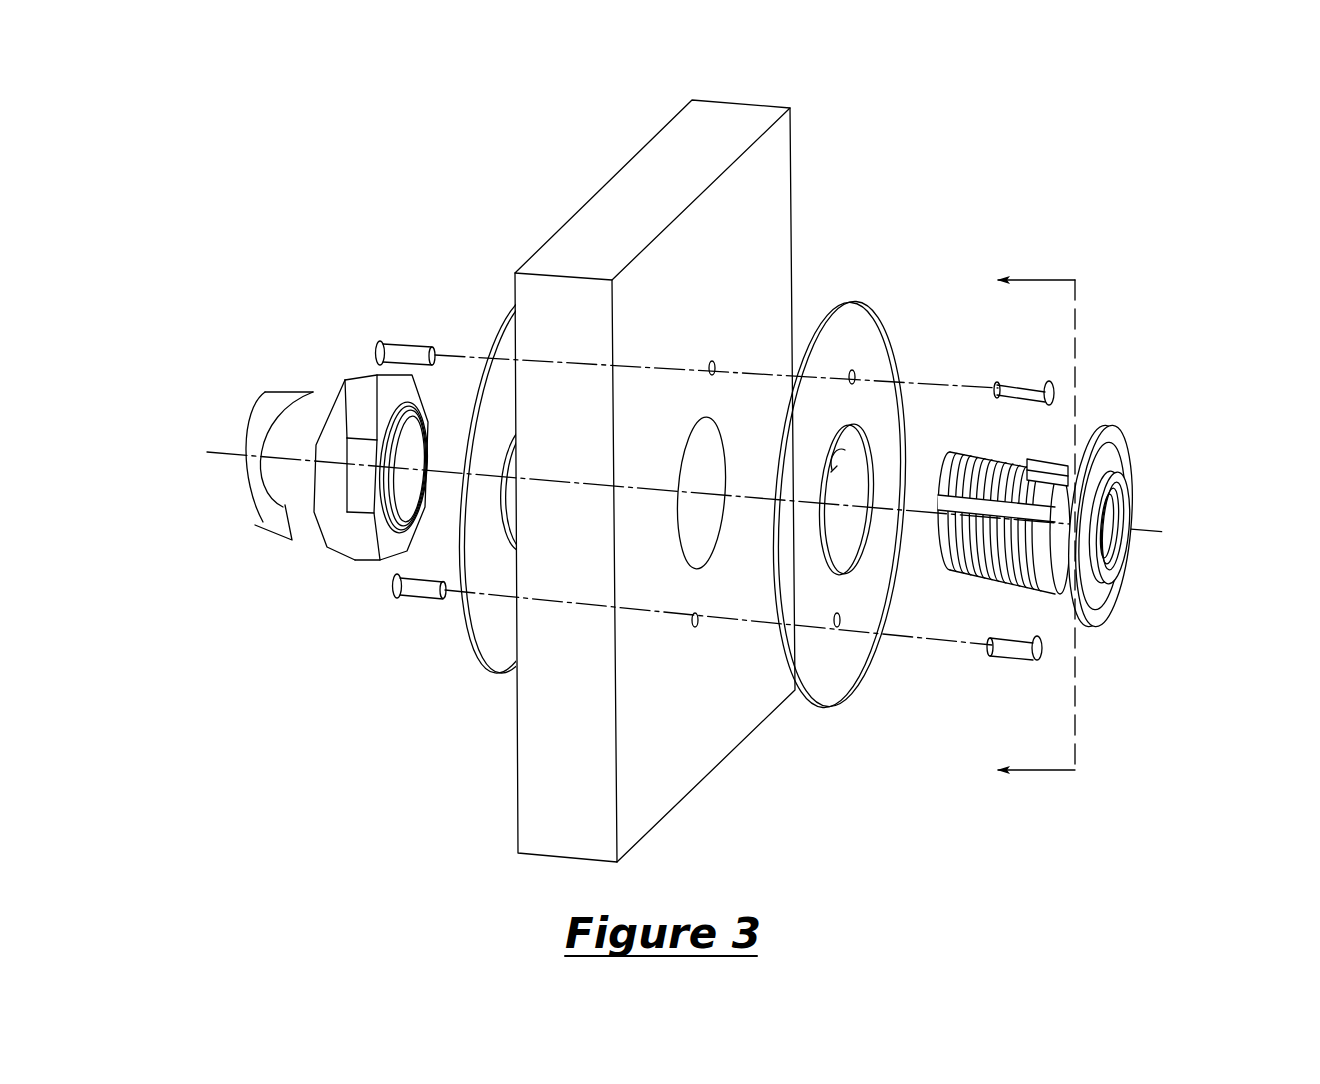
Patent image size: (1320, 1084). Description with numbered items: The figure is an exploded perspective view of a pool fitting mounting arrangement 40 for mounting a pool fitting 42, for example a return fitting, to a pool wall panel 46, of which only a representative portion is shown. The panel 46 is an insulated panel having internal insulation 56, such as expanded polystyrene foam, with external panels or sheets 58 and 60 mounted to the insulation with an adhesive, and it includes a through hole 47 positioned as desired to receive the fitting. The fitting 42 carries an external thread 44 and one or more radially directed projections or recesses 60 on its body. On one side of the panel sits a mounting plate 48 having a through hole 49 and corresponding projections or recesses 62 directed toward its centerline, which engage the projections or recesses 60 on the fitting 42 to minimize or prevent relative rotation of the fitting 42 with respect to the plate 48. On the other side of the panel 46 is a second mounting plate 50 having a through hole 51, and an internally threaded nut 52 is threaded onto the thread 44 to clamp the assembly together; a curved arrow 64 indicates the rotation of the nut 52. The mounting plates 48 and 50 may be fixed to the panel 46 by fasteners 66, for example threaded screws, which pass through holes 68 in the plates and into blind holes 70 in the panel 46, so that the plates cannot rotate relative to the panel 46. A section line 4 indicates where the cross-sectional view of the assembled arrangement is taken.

The section line 4- 4 is at (1032, 525).
The pool fitting mounting arrangement 40 is at (947, 227).
The pool fitting 42 is at (1137, 498).
The external thread 44 is at (1010, 557).
The pool wall panel 46 is at (490, 195).
The through hole 47 is at (680, 552).
The mounting plate 48 is at (858, 327).
The through hole 49 is at (824, 570).
The mounting plate 50 is at (503, 318).
The through hole 51 is at (510, 527).
The nut 52 is at (376, 376).
The internal insulation 56 is at (693, 168).
The external panel 58 is at (757, 257).
The projections or recesses 60 is at (604, 170).
The projections or recesses 62 is at (840, 456).
The rotation direction 64 is at (280, 523).
The fasteners 66 is at (410, 348).
The through holes 68 is at (862, 375).
The blind holes 70 is at (712, 361).